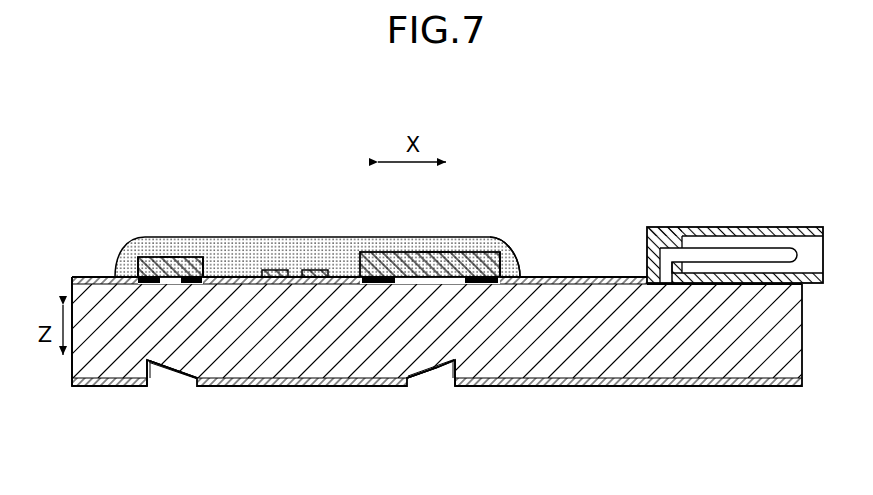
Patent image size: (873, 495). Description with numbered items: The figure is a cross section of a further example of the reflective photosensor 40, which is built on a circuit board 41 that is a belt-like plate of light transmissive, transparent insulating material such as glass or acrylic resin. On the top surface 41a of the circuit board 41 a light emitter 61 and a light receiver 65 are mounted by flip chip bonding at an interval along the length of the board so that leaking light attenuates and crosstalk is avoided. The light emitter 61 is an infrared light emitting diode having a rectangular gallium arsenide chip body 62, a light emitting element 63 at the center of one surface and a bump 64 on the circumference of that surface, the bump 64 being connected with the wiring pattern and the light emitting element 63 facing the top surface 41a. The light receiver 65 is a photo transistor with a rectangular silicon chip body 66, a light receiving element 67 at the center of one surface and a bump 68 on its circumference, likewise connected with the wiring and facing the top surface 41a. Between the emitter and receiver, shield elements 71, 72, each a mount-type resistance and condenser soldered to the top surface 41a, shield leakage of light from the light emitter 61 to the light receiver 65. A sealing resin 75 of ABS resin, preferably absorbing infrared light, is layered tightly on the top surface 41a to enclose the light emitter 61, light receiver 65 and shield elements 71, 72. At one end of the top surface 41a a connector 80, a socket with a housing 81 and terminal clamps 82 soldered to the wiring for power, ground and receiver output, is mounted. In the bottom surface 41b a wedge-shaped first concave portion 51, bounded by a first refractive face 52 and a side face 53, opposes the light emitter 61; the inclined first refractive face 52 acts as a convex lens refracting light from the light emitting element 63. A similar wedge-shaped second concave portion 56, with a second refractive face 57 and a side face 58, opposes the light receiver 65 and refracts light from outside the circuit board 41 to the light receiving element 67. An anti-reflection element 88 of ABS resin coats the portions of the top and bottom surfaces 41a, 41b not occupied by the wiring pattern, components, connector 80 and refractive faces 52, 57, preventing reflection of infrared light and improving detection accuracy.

The reflective photosensor 40 is at (77, 252).
The circuit board 41 is at (85, 300).
The top surface 41a is at (600, 277).
The bottom surface 41b is at (675, 386).
The first concave portion 51 is at (182, 381).
The first refractive face 52 is at (170, 367).
The side face 53 is at (155, 376).
The second concave portion 56 is at (416, 376).
The second refractive face 57 is at (436, 368).
The side face 58 is at (449, 376).
The light emitter 61 is at (183, 265).
The chip body 62 is at (150, 262).
The light emitting element 63 is at (165, 265).
The bump 64 is at (190, 262).
The light receiver 65 is at (395, 252).
The chip body 66 is at (505, 258).
The light receiving element 67 is at (430, 250).
The bump 68 is at (492, 262).
The shield element 71 is at (272, 270).
The shield element 72 is at (310, 270).
The sealing resin 75 is at (245, 248).
The connector 80 is at (735, 212).
The housing 81 is at (735, 228).
The terminal clamps 82 is at (702, 255).
The anti-reflection element 88 is at (100, 277).